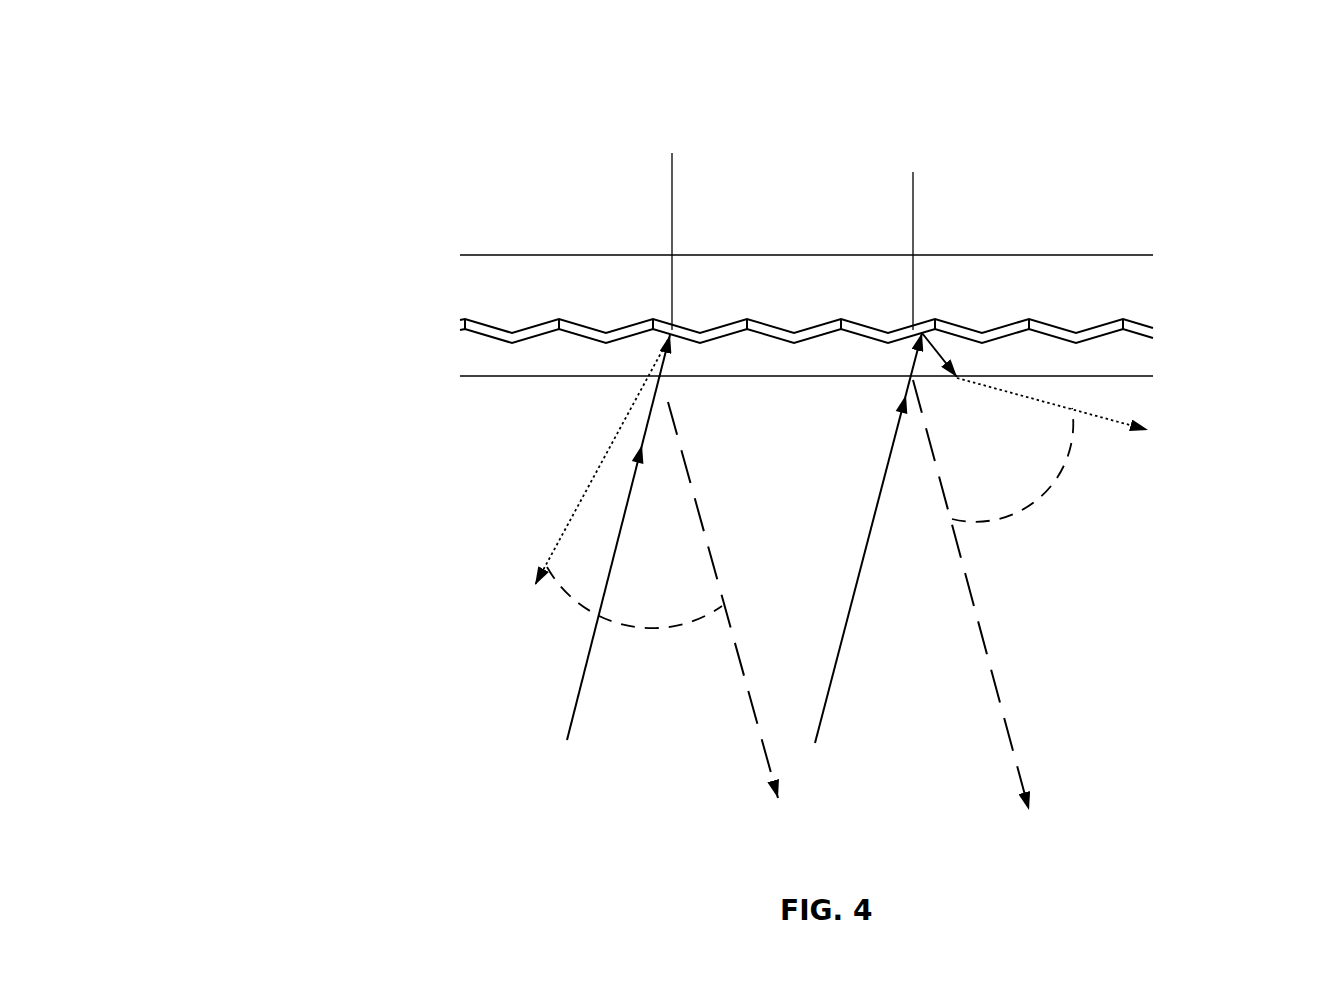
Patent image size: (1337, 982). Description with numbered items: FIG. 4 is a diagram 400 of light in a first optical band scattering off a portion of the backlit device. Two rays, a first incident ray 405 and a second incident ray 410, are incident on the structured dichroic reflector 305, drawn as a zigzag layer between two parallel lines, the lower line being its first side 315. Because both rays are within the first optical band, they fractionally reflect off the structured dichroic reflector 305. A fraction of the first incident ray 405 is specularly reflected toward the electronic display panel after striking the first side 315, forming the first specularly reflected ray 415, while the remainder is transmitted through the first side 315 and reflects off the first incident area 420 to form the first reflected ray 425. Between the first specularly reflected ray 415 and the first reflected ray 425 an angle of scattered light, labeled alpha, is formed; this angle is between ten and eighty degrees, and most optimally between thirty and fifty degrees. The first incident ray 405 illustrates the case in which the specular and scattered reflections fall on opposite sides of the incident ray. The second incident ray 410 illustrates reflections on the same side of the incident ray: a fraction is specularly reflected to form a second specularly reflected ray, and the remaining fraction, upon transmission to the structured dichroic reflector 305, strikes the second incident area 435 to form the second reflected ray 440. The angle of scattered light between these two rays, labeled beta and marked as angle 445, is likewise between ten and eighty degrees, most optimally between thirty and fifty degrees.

The structured dichroic reflector system 400 is at (213, 21).
The structured dichroic reflector 305 is at (1187, 205).
The first side 315 is at (420, 430).
The first incident ray 405 is at (517, 772).
The second incident ray 410 is at (902, 702).
The first specularly reflected ray 415 is at (710, 817).
The first incident area 420 is at (672, 205).
The first reflected ray 425 is at (563, 533).
The second incident area 435 is at (912, 215).
The second reflected ray 440 is at (1227, 370).
The angle of scattered light (beta) 445 is at (1082, 592).